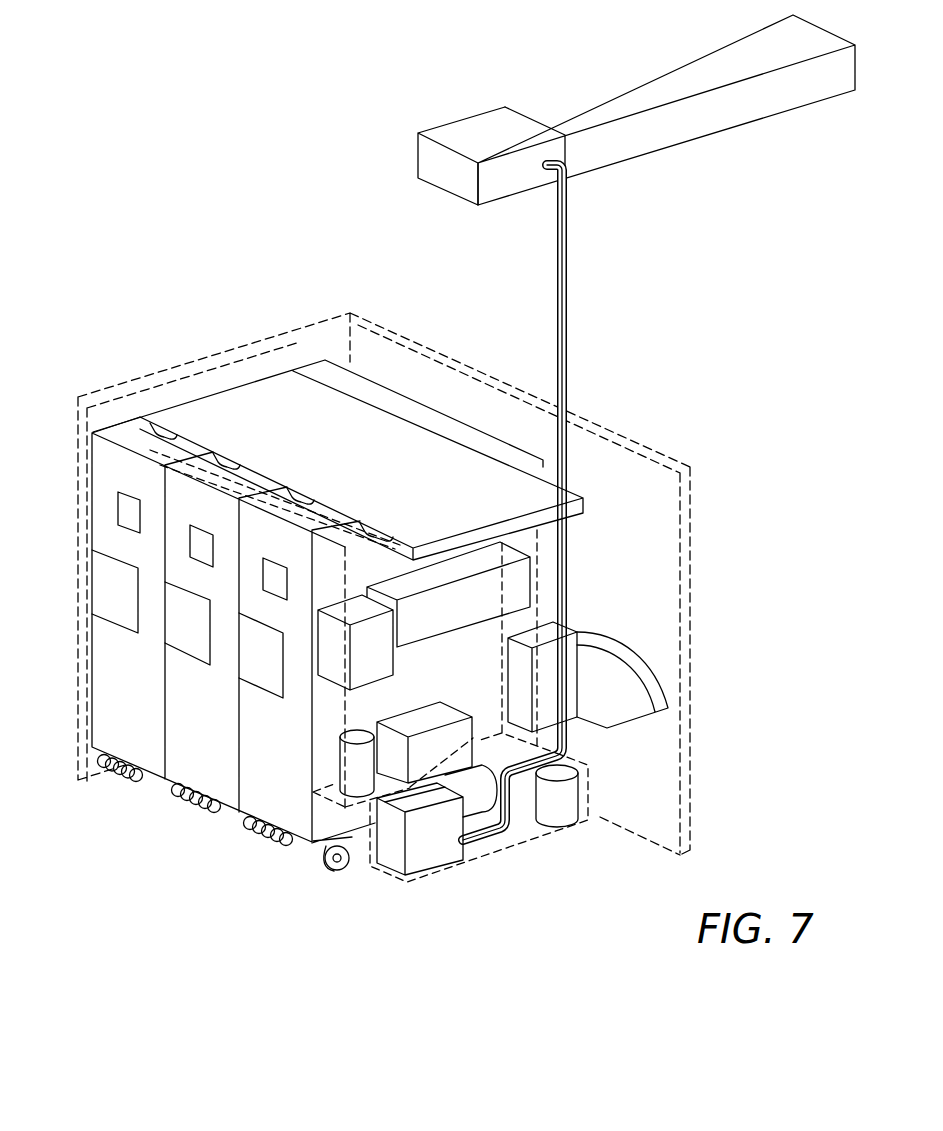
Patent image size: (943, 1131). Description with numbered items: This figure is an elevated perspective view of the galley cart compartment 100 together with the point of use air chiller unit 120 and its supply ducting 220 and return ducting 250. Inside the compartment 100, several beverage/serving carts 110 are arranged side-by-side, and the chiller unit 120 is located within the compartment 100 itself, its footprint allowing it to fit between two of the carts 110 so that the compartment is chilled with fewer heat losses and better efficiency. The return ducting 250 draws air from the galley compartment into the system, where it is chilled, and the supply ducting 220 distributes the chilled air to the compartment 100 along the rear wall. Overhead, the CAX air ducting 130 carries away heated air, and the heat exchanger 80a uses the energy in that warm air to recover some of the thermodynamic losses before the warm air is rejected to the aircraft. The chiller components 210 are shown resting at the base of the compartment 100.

The galley cart compartment 100 is at (690, 783).
The beverage/serving carts 110 is at (128, 737).
The point of use air chiller unit 120 is at (328, 769).
The CAX air ducting 130 is at (762, 55).
The heat exchanger 80a is at (428, 167).
The equipment tray with components 210 is at (483, 865).
The supply ducting 220 is at (635, 662).
The return ducting 250 is at (403, 437).